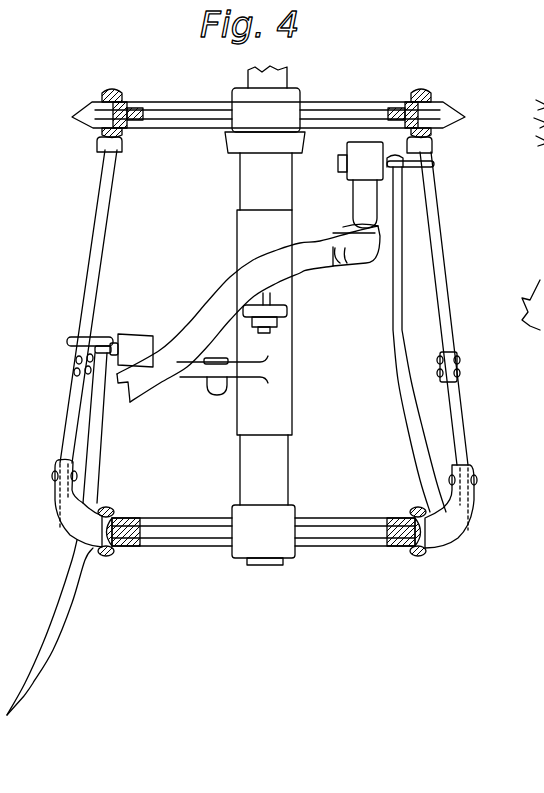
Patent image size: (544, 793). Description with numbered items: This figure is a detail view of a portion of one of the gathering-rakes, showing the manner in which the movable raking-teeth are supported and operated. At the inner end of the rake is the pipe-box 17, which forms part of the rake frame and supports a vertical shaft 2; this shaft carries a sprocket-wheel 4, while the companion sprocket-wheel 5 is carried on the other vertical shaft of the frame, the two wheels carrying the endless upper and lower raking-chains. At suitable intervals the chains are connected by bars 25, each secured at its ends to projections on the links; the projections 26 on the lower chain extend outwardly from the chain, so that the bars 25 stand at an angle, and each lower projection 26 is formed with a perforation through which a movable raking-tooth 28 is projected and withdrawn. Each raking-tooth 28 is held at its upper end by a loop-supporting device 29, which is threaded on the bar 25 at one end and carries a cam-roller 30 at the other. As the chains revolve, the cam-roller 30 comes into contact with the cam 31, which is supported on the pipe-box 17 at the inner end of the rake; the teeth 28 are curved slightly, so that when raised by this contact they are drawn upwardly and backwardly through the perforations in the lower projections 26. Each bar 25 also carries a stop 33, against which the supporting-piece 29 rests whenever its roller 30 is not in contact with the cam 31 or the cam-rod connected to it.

The vertical shaft 2 is at (277, 80).
The sprocket-wheel 4 is at (338, 103).
The sprocket-wheel 5 is at (360, 540).
The pipe-box 17 is at (253, 233).
The bar 25 is at (482, 276).
The lower projection 26 is at (485, 560).
The raking-tooth 28 is at (67, 597).
The loop-supporting device 29 is at (407, 163).
The cam-roller 30 is at (132, 347).
The cam 31 is at (197, 325).
The stop 33 is at (443, 353).